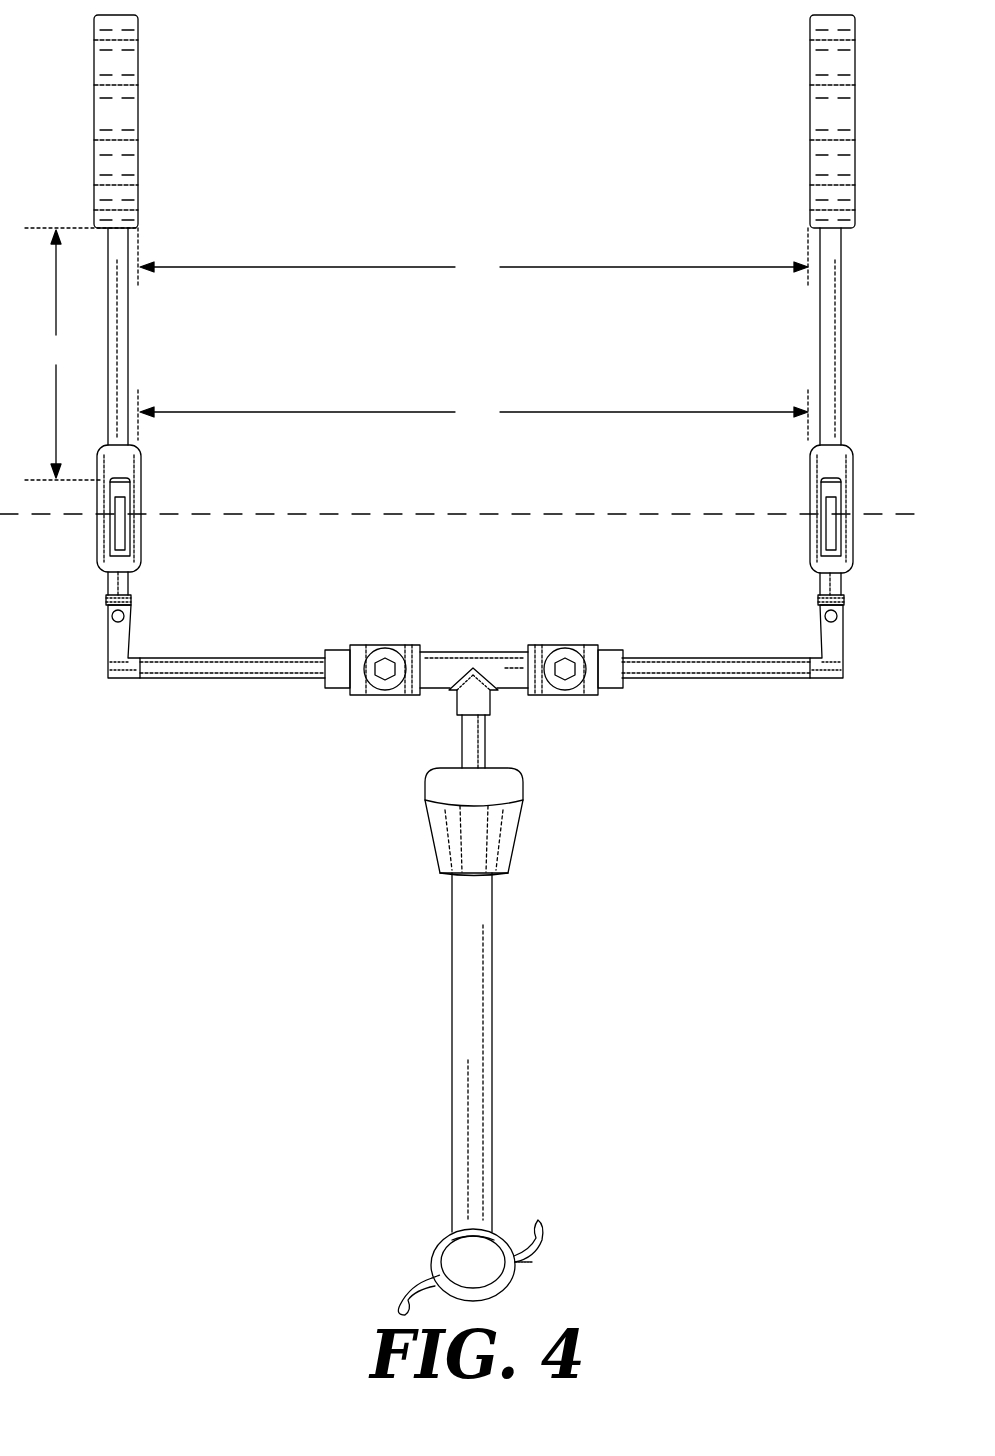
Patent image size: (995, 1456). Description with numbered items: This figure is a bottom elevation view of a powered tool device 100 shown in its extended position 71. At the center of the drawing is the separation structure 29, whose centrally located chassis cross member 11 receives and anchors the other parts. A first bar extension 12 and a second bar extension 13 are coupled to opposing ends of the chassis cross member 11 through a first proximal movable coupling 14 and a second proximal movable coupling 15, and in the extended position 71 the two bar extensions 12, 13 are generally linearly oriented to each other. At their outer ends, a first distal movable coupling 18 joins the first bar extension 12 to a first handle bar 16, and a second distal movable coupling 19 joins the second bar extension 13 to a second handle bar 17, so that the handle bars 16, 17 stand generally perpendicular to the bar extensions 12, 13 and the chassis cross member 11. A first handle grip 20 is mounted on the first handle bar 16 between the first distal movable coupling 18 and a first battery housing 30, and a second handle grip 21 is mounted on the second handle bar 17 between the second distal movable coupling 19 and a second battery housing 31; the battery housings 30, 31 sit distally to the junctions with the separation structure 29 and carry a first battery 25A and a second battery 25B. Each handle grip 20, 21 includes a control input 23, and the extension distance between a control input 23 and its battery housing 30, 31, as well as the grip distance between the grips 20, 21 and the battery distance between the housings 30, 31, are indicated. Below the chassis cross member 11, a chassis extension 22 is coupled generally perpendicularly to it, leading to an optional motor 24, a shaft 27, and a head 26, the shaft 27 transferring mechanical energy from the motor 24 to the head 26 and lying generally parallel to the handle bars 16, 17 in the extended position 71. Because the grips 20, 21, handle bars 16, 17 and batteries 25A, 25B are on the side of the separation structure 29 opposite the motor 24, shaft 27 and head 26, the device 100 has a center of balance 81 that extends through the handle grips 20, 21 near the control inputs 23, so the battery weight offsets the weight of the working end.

The powered tool device 100 is at (650, 905).
The extended position 71 is at (84, 732).
The first battery 25A is at (130, 48).
The second battery 25B is at (822, 45).
The first battery housing 30 is at (106, 200).
The second battery housing 31 is at (842, 201).
The first handle bar 16 is at (122, 345).
The second handle bar 17 is at (832, 345).
The first handle grip 20 is at (127, 470).
The second handle grip 21 is at (822, 470).
The control input 23 is at (120, 536).
The center of balance 81 is at (552, 512).
The first distal movable coupling 18 is at (115, 632).
The second distal movable coupling 19 is at (833, 642).
The first bar extension 12 is at (257, 670).
The second bar extension 13 is at (696, 672).
The first proximal movable coupling 14 is at (373, 660).
The second proximal movable coupling 15 is at (575, 660).
The chassis cross member 11 is at (488, 668).
The separation structure 29 is at (420, 616).
The chassis extension 22 is at (470, 748).
The motor 24 is at (453, 816).
The shaft 27 is at (472, 1022).
The head 26 is at (450, 1262).